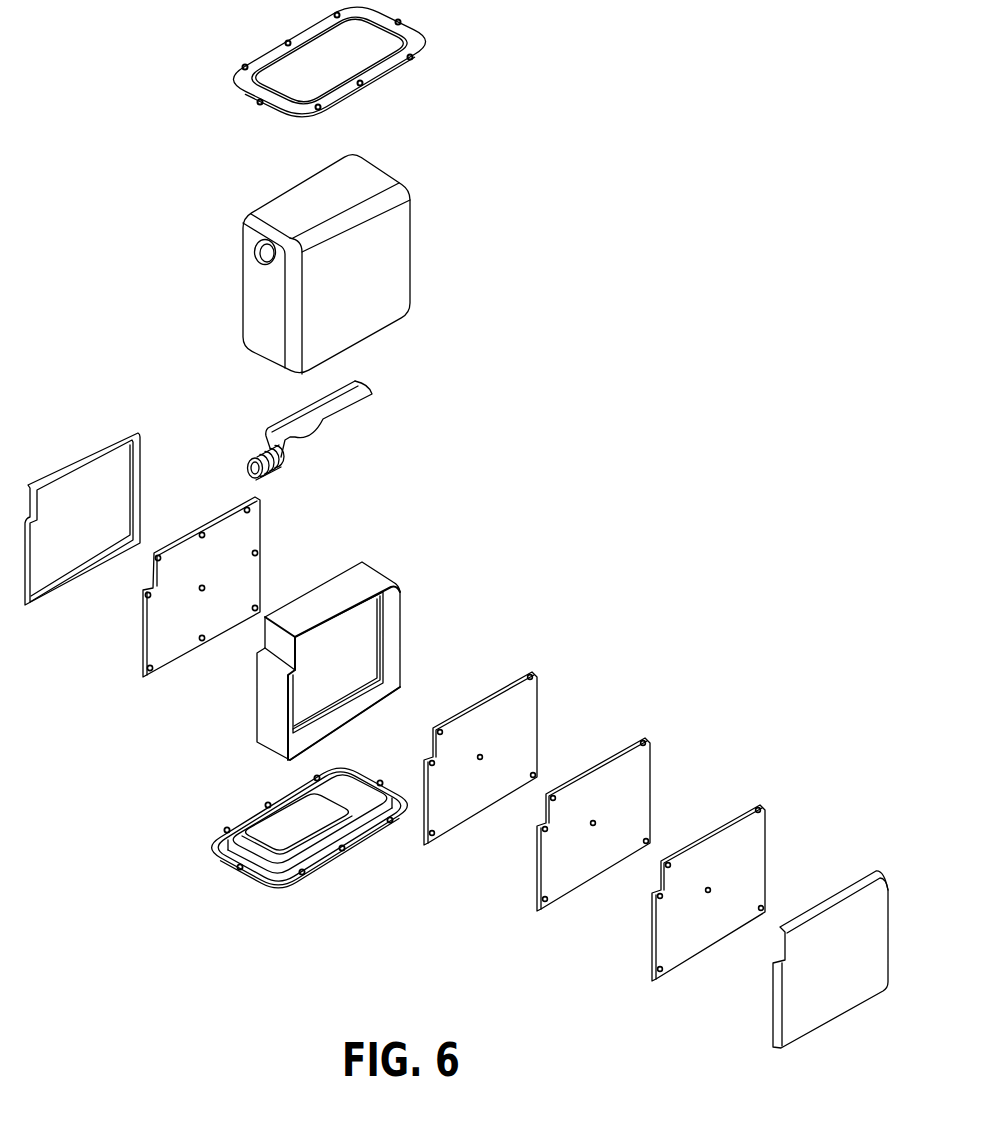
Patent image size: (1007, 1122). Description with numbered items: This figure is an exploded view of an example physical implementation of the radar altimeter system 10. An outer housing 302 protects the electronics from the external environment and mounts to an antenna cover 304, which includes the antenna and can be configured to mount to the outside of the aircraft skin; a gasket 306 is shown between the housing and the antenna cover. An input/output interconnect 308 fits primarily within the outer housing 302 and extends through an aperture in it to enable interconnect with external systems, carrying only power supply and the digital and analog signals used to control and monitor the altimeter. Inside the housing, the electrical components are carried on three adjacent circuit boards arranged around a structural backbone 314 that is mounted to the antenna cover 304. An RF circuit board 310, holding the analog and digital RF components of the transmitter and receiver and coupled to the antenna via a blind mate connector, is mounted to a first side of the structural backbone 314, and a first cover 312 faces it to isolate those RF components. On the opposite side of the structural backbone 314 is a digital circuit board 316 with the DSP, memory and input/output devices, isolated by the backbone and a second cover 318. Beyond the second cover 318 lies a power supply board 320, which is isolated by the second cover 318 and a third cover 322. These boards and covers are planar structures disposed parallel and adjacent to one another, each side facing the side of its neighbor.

The radar altimeter system 10 is at (643, 393).
The outer housing 302 is at (412, 219).
The antenna cover 304 is at (215, 863).
The gasket 306 is at (238, 97).
The input/output interconnect 308 is at (345, 407).
The RF circuit board 310 is at (147, 628).
The first cover 312 is at (143, 470).
The structural backbone 314 is at (262, 710).
The digital circuit board 316 is at (453, 828).
The second cover 318 is at (540, 863).
The power supply board 320 is at (653, 932).
The third cover 322 is at (775, 982).